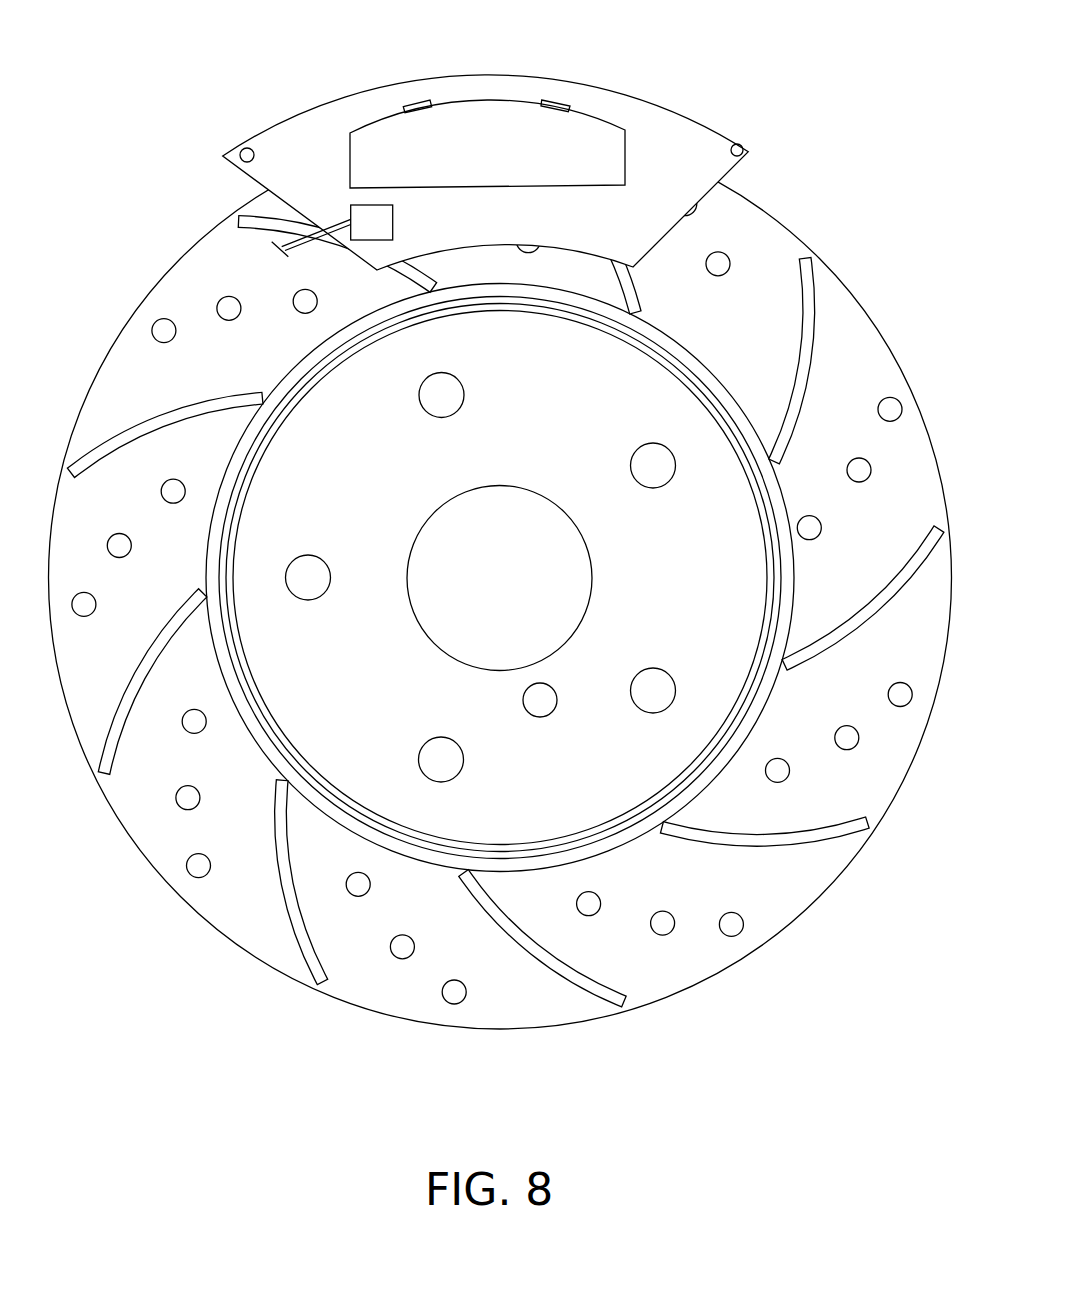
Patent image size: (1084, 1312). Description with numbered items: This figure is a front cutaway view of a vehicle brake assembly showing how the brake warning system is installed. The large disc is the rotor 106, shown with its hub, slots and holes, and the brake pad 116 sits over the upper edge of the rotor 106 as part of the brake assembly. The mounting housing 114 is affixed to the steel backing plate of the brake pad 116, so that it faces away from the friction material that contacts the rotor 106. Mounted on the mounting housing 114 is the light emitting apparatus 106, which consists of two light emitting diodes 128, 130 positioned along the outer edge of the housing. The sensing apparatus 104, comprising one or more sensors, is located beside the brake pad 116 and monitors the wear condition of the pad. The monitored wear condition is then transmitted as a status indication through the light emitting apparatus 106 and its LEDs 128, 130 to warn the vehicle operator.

The sensing apparatus 104 is at (351, 215).
The light emitting apparatus 106 is at (793, 878).
The mounting housing 114 is at (598, 118).
The brake pad 116 is at (713, 128).
The light emitting diode 128 is at (417, 107).
The light emitting diode 130 is at (560, 99).